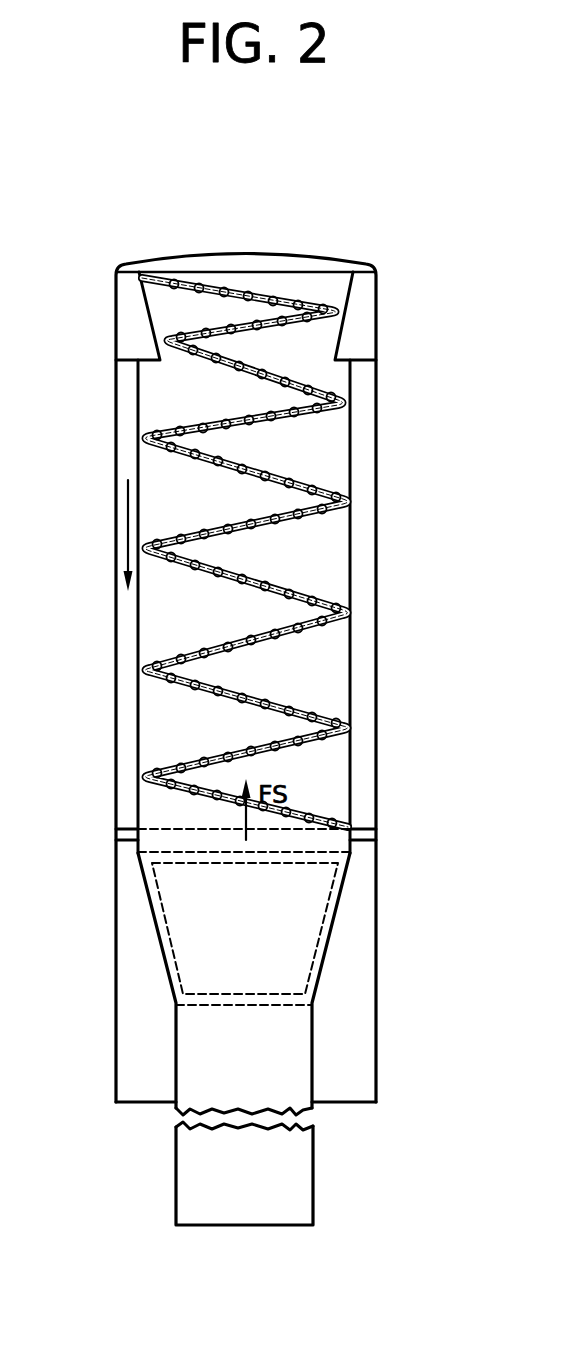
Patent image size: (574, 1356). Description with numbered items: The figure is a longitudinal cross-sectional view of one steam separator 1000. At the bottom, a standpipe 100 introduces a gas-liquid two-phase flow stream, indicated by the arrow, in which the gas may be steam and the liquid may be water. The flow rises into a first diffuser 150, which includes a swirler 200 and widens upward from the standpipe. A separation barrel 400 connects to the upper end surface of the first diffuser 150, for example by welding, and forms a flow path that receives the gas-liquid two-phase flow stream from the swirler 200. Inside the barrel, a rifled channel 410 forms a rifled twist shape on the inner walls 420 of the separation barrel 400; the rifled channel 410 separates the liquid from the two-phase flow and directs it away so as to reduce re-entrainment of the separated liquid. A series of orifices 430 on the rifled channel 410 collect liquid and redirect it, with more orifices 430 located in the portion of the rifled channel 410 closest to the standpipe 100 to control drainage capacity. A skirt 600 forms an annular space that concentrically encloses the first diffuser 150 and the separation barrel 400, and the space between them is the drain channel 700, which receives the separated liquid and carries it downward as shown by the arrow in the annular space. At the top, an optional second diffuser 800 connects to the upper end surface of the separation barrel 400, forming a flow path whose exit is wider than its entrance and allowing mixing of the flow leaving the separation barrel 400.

The standpipe 100 is at (310, 1176).
The first diffuser 150 is at (162, 945).
The swirler 200 is at (295, 949).
The separation barrel 400 is at (355, 697).
The rifled channel 410 is at (305, 703).
The inner walls 420 is at (340, 528).
The orifices 430 is at (273, 422).
The skirt 600 is at (380, 582).
The drain channel 700 is at (387, 455).
The second diffuser 800 is at (345, 290).
The steam separator 1000 is at (345, 203).